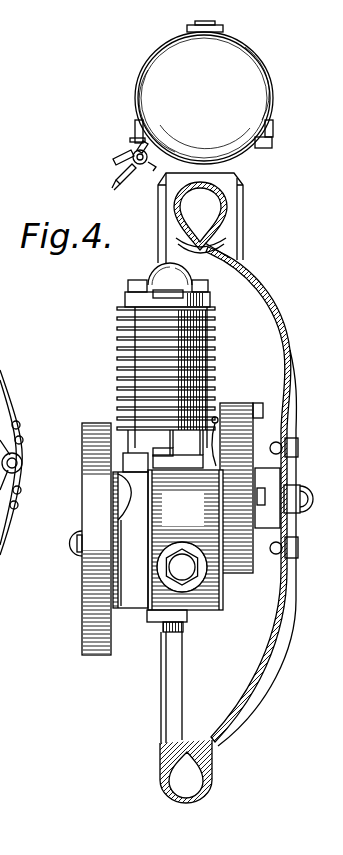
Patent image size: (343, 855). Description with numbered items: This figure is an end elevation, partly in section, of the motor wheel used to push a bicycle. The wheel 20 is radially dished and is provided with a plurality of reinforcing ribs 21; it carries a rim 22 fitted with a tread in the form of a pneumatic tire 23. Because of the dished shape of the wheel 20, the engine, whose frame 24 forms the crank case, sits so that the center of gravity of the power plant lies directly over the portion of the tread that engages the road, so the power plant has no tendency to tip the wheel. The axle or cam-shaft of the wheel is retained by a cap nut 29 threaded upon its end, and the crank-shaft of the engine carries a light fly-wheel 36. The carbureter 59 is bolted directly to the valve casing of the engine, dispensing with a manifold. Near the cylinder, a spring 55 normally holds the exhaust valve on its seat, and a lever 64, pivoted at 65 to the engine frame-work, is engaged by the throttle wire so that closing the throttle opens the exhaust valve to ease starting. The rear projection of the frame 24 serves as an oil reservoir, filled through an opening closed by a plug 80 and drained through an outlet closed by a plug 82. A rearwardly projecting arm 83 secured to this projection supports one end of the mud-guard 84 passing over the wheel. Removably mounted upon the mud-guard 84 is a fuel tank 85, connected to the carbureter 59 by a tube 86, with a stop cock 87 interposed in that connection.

The fuel tank 85 is at (201, 92).
The stop cock 87 is at (116, 153).
The tube 86 is at (110, 181).
The mud-guard 84 is at (232, 180).
The pneumatic tire 23 is at (245, 197).
The rim 22 is at (238, 243).
The reinforcing ribs 21 is at (297, 365).
The carbureter 59 is at (163, 280).
The wheel 20 is at (184, 374).
The pivot 65 is at (217, 417).
The lever 64 is at (222, 442).
The cap nut 29 is at (306, 504).
The frame 24 is at (185, 551).
The plug 82 is at (184, 567).
The plug 80 is at (113, 460).
The rearwardly projecting arm 83 is at (128, 496).
The fly-wheel 36 is at (82, 578).
The spring 55 is at (2, 372).